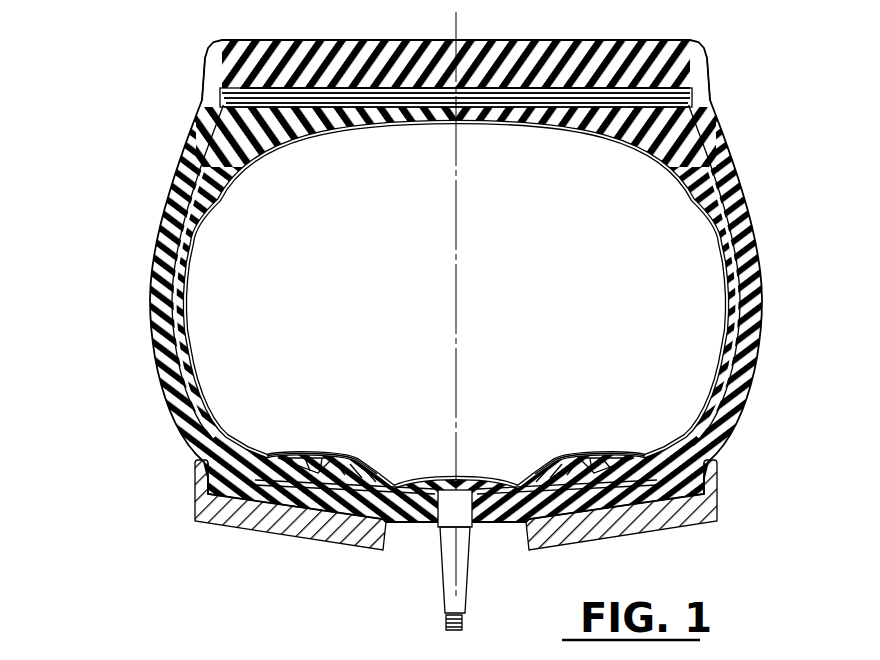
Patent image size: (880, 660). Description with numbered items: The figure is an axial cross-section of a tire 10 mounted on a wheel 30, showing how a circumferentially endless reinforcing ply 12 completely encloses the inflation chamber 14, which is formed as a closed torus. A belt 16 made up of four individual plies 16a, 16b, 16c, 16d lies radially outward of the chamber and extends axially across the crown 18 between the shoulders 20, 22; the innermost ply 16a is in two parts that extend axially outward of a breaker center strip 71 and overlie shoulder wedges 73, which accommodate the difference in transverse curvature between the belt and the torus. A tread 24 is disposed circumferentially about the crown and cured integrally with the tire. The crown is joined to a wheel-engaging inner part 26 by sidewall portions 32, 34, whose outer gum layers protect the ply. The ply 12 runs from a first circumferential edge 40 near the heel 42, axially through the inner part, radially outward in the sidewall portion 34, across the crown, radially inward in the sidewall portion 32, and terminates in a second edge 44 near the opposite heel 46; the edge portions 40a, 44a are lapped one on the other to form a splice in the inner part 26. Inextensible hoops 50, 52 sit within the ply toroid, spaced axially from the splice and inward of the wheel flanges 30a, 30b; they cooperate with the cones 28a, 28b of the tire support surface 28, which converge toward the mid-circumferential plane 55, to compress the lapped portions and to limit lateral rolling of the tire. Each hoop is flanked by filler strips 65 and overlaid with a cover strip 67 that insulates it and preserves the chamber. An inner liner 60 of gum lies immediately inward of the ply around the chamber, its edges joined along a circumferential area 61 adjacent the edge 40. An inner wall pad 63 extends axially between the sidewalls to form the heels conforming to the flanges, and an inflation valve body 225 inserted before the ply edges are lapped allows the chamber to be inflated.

The tire 10 is at (148, 256).
The ply 12 is at (735, 262).
The inflation chamber 14 is at (412, 295).
The belt 16 is at (692, 90).
The first belt ply 16a is at (236, 104).
The belt ply 16b is at (230, 98).
The belt ply 16c is at (240, 93).
The belt ply 16d is at (248, 88).
The crown 18 is at (487, 112).
The shoulder 20 is at (712, 96).
The shoulder 22 is at (190, 142).
The tread 24 is at (370, 52).
The wheel-engaging inner part 26 is at (345, 497).
The tire support surface 28 is at (385, 502).
The cone 28a is at (630, 500).
The cone 28b is at (300, 496).
The wheel 30 is at (196, 514).
The flange 30a is at (712, 465).
The flange 30b is at (200, 462).
The sidewall portion 32 is at (762, 322).
The sidewall portion 34 is at (152, 305).
The first circumferential edge 40 is at (660, 500).
The edge portion 40a is at (430, 480).
The heel 42 is at (692, 488).
The second circumferential edge 44 is at (268, 496).
The edge portion 44a is at (404, 505).
The heel 46 is at (228, 486).
The hoop 50 is at (598, 456).
The hoop 52 is at (325, 460).
The mid-circumferential plane 55 is at (458, 262).
The inner liner 60 is at (202, 215).
The circumferential area 61 is at (668, 442).
The inner wall pad 63 is at (482, 515).
The filler strip 65 is at (318, 457).
The cover strip 67 is at (283, 454).
The breaker center strip 71 is at (383, 110).
The shoulder wedge 73 is at (222, 155).
The inflation valve body 225 is at (466, 479).